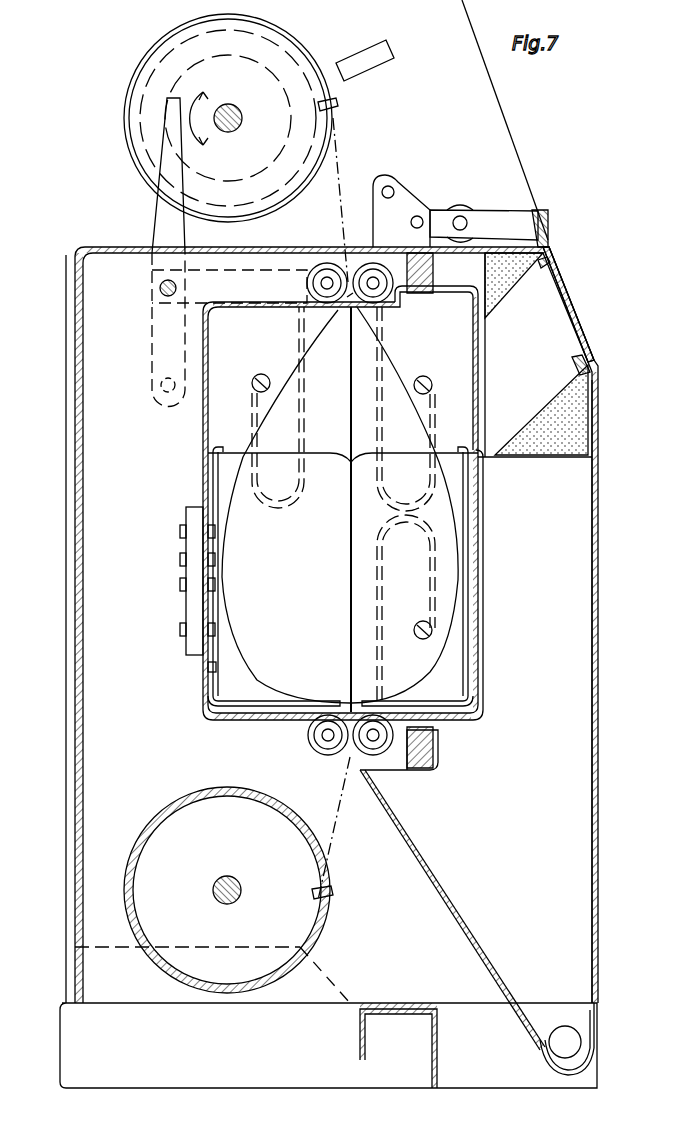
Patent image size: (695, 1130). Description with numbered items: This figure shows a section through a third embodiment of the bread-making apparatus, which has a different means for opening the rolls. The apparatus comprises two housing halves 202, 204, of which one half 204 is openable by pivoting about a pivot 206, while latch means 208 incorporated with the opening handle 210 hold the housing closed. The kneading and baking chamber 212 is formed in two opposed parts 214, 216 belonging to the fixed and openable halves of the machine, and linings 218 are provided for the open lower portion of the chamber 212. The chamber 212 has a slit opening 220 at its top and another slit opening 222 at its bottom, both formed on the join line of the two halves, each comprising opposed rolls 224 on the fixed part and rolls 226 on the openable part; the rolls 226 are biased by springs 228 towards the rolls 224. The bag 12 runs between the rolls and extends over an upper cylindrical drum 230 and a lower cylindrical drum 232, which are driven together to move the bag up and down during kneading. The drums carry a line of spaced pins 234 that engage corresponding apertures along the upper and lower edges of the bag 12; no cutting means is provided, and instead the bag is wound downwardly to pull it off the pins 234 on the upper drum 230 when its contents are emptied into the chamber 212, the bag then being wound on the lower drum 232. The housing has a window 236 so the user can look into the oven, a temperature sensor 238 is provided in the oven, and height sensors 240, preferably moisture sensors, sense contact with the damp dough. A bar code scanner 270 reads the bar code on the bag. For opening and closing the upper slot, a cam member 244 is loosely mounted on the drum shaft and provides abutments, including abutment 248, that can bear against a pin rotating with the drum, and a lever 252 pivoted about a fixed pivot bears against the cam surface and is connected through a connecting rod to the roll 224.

The bag 12 is at (433, 670).
The housing half 202 is at (76, 690).
The housing half 204 is at (596, 672).
The pivot 206 is at (575, 1040).
The latch means 208 is at (406, 205).
The opening handle 210 is at (525, 222).
The kneading and baking chamber 212 is at (344, 499).
The chamber part 214 is at (205, 485).
The chamber part 216 is at (478, 580).
The linings 218 is at (460, 655).
The slit opening 220 is at (357, 214).
The slit opening 222 is at (352, 762).
The rolls 224 is at (327, 263).
The rolls 226 is at (378, 302).
The springs 228 is at (385, 500).
The upper cylindrical drum 230 is at (158, 72).
The lower cylindrical drum 232 is at (173, 832).
The pins 234 is at (340, 102).
The window 236 is at (562, 300).
The temperature sensor 238 is at (212, 668).
The height sensors 240 is at (182, 586).
The cam member 244 is at (262, 100).
The abutment 248 is at (250, 292).
The lever 252 is at (165, 229).
The bar code scanner 270 is at (380, 52).